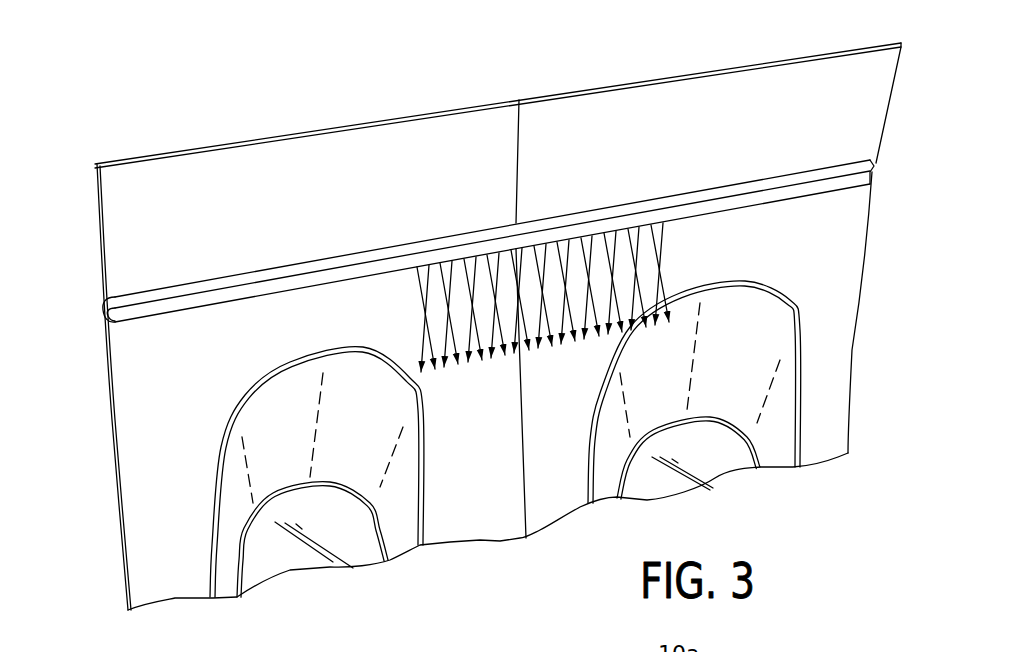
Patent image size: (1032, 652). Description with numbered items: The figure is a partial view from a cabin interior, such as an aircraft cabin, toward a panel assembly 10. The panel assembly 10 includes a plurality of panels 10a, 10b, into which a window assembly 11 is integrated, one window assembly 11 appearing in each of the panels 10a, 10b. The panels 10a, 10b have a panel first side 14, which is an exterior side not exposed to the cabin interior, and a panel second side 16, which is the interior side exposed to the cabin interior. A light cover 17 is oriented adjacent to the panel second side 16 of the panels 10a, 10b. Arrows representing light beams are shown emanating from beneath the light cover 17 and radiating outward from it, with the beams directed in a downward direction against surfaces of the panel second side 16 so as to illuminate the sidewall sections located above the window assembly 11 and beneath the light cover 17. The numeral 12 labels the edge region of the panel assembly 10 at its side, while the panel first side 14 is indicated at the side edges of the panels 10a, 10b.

The panel assembly 10 is at (462, 90).
The panel 10a is at (383, 152).
The panel 10b is at (762, 93).
The window assembly 11 is at (228, 548).
The side edge 12 is at (97, 212).
The panel first side 14 is at (84, 273).
The panel second side 16 is at (174, 175).
The light cover 17 is at (290, 288).